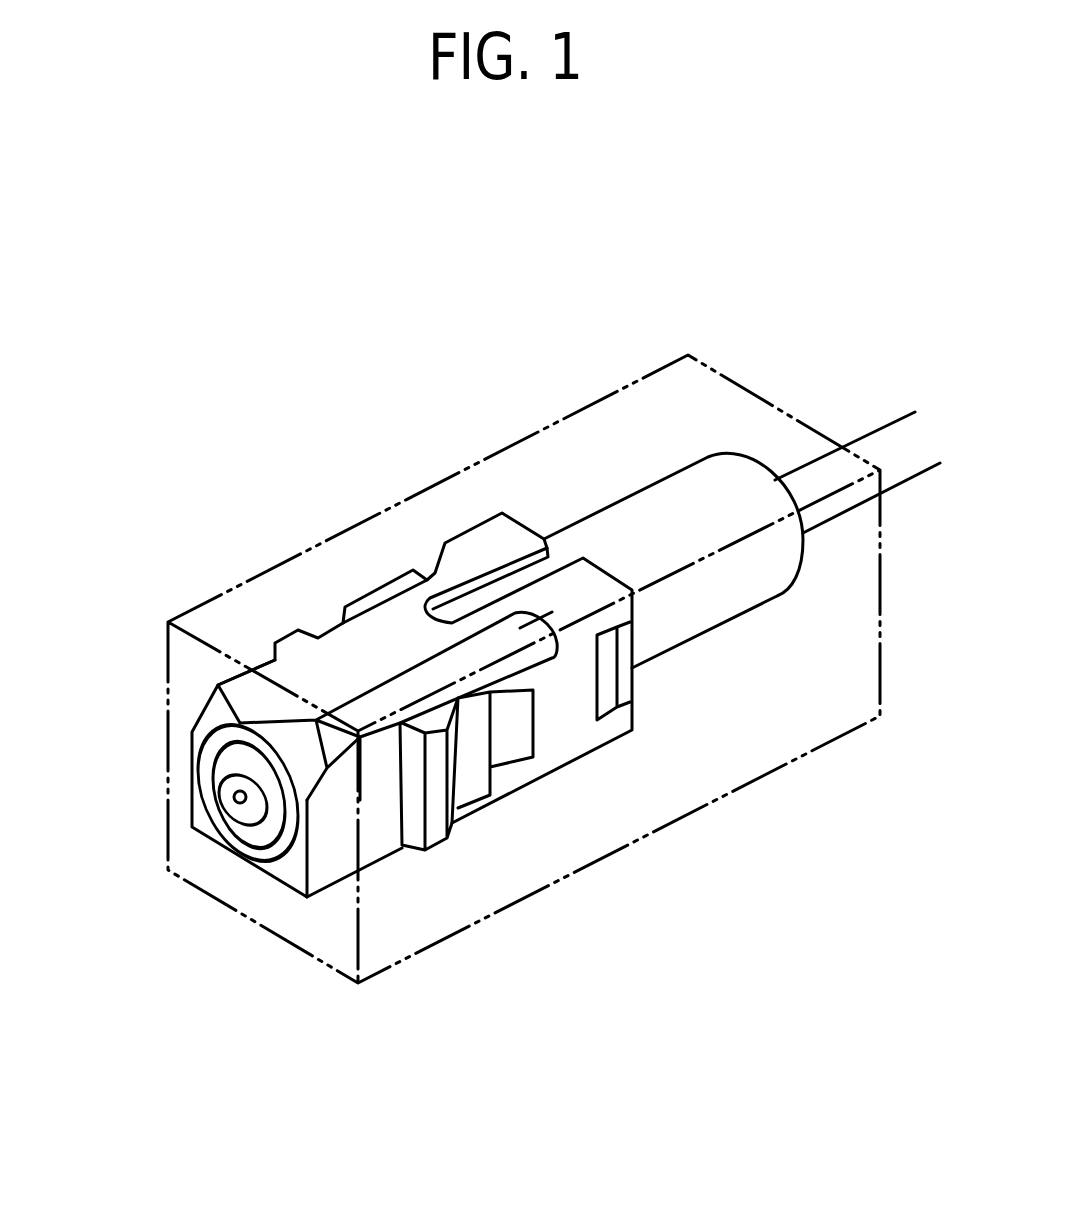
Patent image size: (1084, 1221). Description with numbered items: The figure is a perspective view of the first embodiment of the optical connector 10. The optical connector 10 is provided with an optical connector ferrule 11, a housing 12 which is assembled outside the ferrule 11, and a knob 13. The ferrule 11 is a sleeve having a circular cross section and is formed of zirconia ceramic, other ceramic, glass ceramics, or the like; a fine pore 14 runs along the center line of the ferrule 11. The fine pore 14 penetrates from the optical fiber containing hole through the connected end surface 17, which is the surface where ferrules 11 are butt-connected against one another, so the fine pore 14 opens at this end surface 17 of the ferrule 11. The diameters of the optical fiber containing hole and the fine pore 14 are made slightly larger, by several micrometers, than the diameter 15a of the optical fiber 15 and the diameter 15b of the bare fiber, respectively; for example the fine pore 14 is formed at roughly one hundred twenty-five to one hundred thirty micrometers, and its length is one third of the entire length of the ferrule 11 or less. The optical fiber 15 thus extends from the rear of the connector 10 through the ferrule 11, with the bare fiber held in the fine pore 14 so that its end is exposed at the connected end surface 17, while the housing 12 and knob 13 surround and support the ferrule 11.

The optical connector 10 is at (290, 553).
The optical connector ferrule 11 is at (264, 872).
The housing 12 is at (500, 523).
The knob 13 is at (665, 828).
The fine pore 14 is at (240, 798).
The optical fiber 15 is at (863, 443).
The diameter of the optical fiber 15a is at (857, 472).
The diameter of the bare fiber 15b is at (240, 797).
The connected end surface 17 is at (225, 787).